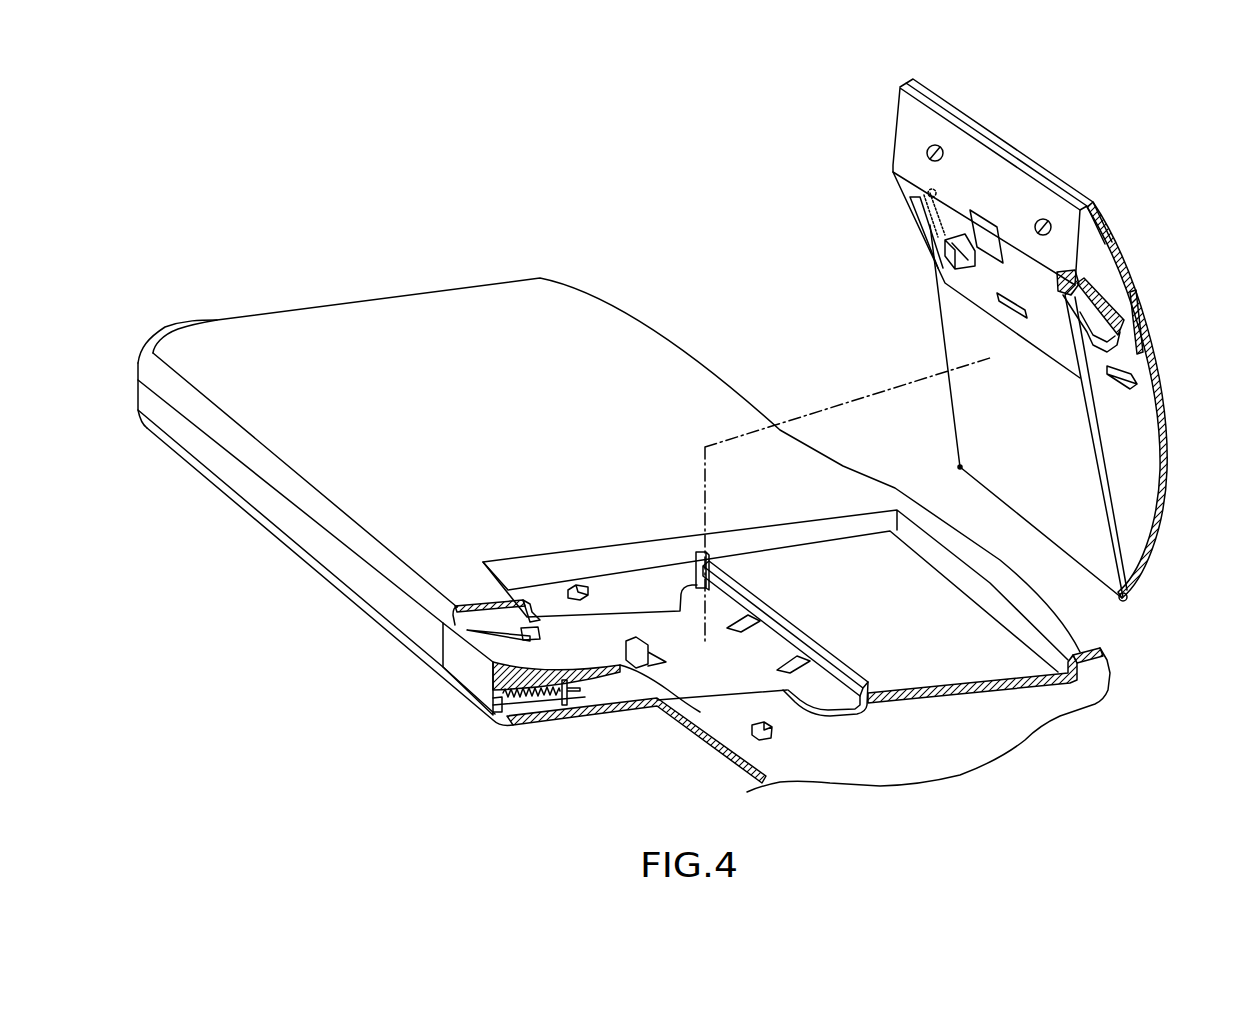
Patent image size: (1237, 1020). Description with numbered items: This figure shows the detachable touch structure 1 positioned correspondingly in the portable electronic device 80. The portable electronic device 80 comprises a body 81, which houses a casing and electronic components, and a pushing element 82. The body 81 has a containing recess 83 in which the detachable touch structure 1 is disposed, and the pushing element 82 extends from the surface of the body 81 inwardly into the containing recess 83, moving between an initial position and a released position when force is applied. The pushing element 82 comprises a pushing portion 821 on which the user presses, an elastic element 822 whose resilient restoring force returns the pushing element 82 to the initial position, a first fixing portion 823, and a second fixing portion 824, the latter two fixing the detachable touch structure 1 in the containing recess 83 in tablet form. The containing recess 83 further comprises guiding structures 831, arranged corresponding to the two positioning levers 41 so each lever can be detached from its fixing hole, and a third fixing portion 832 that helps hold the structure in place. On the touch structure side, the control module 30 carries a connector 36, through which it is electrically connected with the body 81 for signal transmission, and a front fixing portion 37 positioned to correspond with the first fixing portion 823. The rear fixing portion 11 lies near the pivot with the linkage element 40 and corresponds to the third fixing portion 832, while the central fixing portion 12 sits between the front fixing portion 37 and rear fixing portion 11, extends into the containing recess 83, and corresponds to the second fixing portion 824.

The detachable touch structure 1 is at (802, 212).
The rear fixing portion 11 is at (960, 467).
The central fixing portion 12 is at (1152, 378).
The control module 30 is at (913, 163).
The connector 36 is at (947, 248).
The front fixing portion 37 is at (992, 225).
The linkage element 40 is at (960, 345).
The positioning levers 41 is at (943, 270).
The portable electronic device 80 is at (624, 484).
The body 81 is at (404, 322).
The pushing element 82 is at (460, 673).
The pushing portion 821 is at (497, 707).
The elastic element 822 is at (547, 693).
The first fixing portion 823 is at (623, 660).
The second fixing portion 824 is at (848, 682).
The containing recess 83 is at (653, 577).
The guiding structure 831 is at (575, 588).
The third fixing portion 832 is at (893, 518).